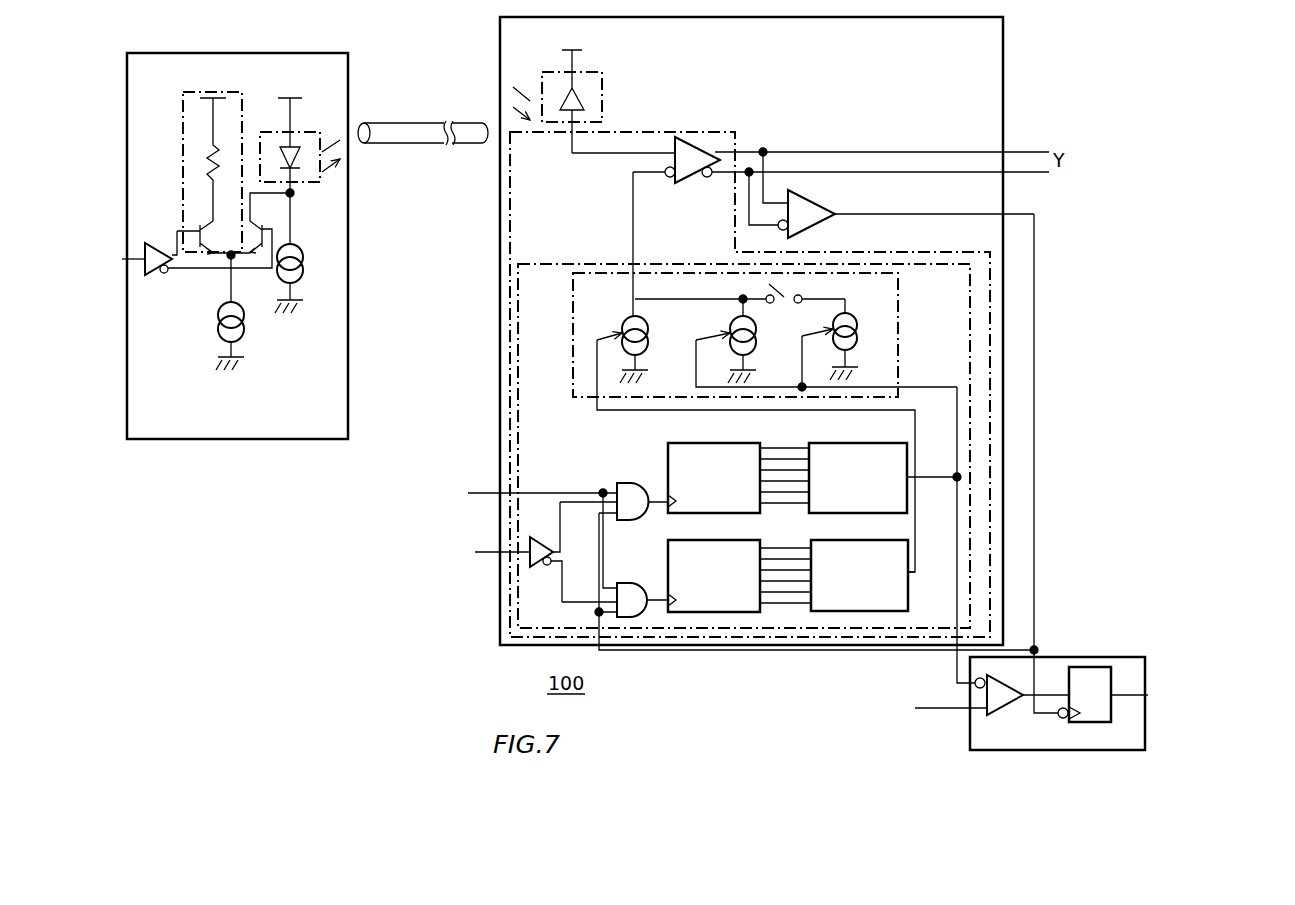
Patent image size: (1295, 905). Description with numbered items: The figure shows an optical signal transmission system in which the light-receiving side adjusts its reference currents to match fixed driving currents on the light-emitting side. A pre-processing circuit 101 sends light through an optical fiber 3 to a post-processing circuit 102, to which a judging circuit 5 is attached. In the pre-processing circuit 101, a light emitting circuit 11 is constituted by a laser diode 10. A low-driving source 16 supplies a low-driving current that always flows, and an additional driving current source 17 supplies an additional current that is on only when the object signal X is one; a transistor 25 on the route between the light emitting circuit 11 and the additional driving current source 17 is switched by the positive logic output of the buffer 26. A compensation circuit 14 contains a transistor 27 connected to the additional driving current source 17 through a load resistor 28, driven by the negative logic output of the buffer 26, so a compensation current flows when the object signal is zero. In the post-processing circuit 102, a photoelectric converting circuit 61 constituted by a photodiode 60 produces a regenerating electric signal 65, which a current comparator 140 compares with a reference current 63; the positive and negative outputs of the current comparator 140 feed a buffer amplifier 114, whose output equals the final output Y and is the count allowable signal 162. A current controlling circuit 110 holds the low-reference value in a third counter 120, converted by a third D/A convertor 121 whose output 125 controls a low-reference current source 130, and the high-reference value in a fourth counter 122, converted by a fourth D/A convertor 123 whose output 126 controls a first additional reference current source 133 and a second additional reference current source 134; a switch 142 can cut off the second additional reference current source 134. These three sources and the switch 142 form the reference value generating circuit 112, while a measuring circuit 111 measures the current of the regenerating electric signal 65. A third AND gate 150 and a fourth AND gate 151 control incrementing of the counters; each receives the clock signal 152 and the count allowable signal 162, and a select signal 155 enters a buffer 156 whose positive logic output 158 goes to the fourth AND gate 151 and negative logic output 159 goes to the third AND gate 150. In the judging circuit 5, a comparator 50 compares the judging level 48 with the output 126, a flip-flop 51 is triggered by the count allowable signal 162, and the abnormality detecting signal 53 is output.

The optical fiber 3 is at (418, 123).
The judging circuit 5 is at (1088, 657).
The laser diode 10 is at (302, 170).
The light emitting circuit 11 is at (315, 130).
The compensation circuit 14 is at (183, 95).
The low-driving source 16 is at (303, 263).
The additional driving current source 17 is at (245, 322).
The transistor 25 is at (263, 215).
The buffer 26 is at (166, 274).
The transistor 27 is at (218, 215).
The load resistor 28 is at (215, 160).
The judging level 48 is at (956, 712).
The comparator 50 is at (1012, 680).
The flip-flop 51 is at (1065, 689).
The abnormality detecting signal output line 53 is at (1114, 700).
The photodiode 60 is at (596, 101).
The photoelectric converting circuit 61 is at (602, 72).
The reference current 63 is at (632, 198).
The regenerating electric signal 65 is at (582, 155).
The pre-processing circuit 101 is at (348, 83).
The post-processing circuit 102 is at (1003, 63).
The current controlling circuit 110 is at (655, 132).
The measuring circuit 111 is at (520, 438).
The reference value generating circuit 112 is at (900, 285).
The buffer amplifier 114 is at (840, 200).
The third counter 120 is at (725, 540).
The third D/A convertor 121 is at (865, 540).
The fourth counter 122 is at (725, 443).
The fourth D/A convertor 123 is at (865, 443).
The output of the third D/A convertor 125 is at (915, 468).
The output of the fourth D/A convertor 126 is at (914, 383).
The low-reference current source 130 is at (650, 335).
The first additional reference current source 133 is at (757, 335).
The second additional reference current source 134 is at (858, 333).
The current comparator 140 is at (693, 185).
The switch 142 is at (782, 303).
The third AND gate 150 is at (622, 580).
The fourth AND gate 151 is at (628, 475).
The clock signal 152 is at (535, 493).
The select signal 155 is at (488, 554).
The buffer 156 is at (548, 566).
The positive logic output 158 is at (560, 536).
The negative logic output 159 is at (573, 600).
The count allowable signal 162 is at (1034, 310).